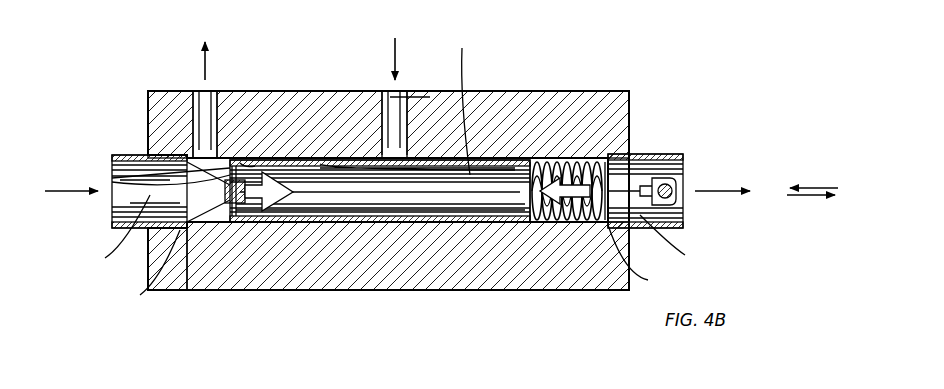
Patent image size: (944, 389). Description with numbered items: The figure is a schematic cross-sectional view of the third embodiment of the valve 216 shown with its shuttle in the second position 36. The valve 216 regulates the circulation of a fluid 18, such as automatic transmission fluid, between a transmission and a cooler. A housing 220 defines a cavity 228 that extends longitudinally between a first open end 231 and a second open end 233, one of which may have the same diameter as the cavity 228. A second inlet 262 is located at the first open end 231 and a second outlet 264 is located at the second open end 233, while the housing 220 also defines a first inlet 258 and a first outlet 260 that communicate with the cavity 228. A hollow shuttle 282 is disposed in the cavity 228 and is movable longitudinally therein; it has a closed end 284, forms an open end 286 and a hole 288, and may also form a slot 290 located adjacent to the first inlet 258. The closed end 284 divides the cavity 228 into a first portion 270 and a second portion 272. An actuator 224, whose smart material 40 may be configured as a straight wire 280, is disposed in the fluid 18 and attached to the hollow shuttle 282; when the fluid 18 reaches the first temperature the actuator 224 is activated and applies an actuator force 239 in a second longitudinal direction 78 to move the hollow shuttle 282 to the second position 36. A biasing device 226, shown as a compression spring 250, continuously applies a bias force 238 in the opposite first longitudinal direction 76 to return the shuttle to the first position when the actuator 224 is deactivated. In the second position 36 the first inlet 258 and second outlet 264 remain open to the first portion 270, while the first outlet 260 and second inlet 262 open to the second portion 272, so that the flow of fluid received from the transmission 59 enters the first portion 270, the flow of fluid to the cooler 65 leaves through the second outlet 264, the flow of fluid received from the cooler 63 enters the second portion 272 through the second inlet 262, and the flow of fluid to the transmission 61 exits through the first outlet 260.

The housing 220 is at (595, 108).
The first outlet 260 is at (205, 113).
The first inlet 258 is at (398, 98).
The slot 290 is at (395, 100).
The first open end 231 is at (128, 195).
The second inlet 262 is at (110, 230).
The cavity 228 is at (600, 80).
The flow of fluid received from the cooler 63 is at (82, 188).
The second portion of the cavity 272 is at (112, 178).
The first portion of the cavity 270 is at (210, 185).
The hole 288 is at (225, 160).
The flow of fluid to the transmission 61 is at (204, 68).
The actuator 224 is at (295, 168).
The hollow shuttle 282 is at (250, 165).
The smart material 40 is at (340, 180).
The straight wire 280 is at (378, 200).
The fluid 18 is at (492, 198).
The closed end of the hollow shuttle 284 is at (233, 205).
The actuator force 239 is at (272, 205).
The biasing device 226 is at (585, 225).
The bias force 238 is at (560, 180).
The valve 216 is at (490, 55).
The second position 36 is at (495, 70).
The open end of the hollow shuttle 286 is at (464, 103).
The flow of fluid received from the transmission 59 is at (396, 62).
The second outlet 264 is at (668, 162).
The second open end 233 is at (673, 238).
The compression spring 250 is at (645, 257).
The flow of fluid to the cooler 65 is at (712, 192).
The first longitudinal direction 76 is at (808, 188).
The second longitudinal direction 78 is at (808, 195).